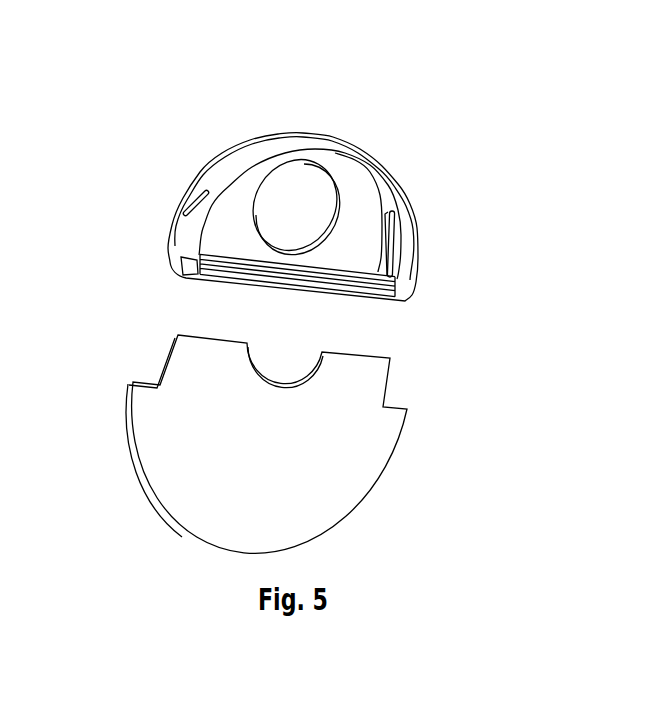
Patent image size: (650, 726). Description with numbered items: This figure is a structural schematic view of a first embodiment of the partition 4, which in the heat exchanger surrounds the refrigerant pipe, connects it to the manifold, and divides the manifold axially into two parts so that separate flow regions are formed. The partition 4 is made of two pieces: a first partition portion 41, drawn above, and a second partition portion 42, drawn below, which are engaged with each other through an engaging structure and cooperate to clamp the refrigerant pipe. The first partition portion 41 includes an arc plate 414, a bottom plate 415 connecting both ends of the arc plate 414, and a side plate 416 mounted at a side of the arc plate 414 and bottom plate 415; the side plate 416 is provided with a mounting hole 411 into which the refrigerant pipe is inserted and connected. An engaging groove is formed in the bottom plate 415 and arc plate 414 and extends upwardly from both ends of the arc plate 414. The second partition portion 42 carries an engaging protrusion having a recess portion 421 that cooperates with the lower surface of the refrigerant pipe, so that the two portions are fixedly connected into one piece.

The partition 4 is at (462, 256).
The first partition portion 41 is at (478, 62).
The mounting hole 411 is at (292, 217).
The arc plate 414 is at (238, 173).
The bottom plate 415 is at (300, 283).
The side plate 416 is at (367, 217).
The second partition portion 42 is at (282, 480).
The recess portion 421 is at (282, 358).